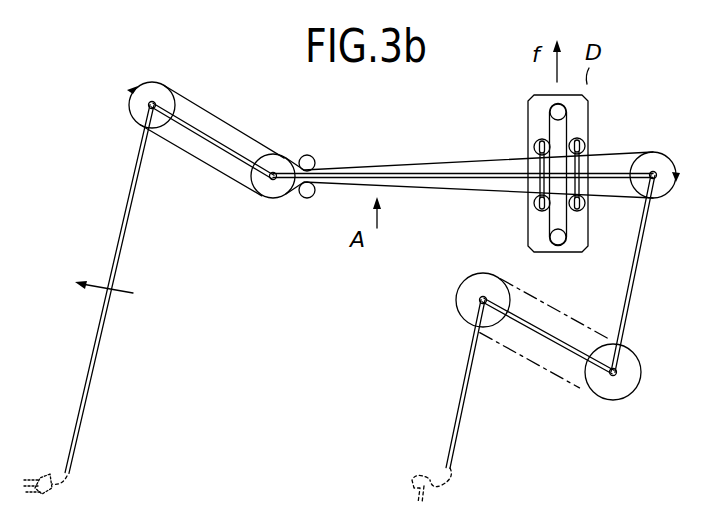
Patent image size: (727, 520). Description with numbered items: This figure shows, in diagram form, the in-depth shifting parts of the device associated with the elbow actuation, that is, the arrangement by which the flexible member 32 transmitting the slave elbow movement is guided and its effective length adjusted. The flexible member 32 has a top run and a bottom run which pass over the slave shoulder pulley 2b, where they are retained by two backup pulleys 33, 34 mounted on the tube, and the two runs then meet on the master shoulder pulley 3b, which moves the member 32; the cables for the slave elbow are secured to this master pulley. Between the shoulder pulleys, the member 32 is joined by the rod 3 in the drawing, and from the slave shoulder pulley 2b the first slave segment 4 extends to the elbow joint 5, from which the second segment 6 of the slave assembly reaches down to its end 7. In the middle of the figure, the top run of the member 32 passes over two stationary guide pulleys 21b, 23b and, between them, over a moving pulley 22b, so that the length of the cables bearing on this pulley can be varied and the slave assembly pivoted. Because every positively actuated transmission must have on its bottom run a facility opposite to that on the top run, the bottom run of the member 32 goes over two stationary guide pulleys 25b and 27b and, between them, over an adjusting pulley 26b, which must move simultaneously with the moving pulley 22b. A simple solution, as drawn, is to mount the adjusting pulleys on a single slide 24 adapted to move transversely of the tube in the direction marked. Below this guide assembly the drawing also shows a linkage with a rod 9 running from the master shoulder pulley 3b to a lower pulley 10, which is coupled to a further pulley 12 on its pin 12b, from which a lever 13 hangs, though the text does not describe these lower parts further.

The slave shoulder pulley 2b is at (276, 157).
The connecting rod 3 is at (662, 193).
The master shoulder pulley 3b is at (667, 164).
The first slave segment 4 is at (190, 133).
The elbow joint 5 is at (165, 85).
The second segment of the slave assembly 6 is at (123, 236).
The pivot foot 7 is at (72, 480).
The link rod 9 is at (628, 320).
The pulley 10 is at (608, 380).
The pulley pin 12 is at (480, 297).
The pulley 12b is at (465, 309).
The lever 13 is at (461, 400).
The stationary guide pulley 21b is at (534, 145).
The moving pulley 22b is at (565, 107).
The stationary guide pulley 23b is at (583, 141).
The slide 24 is at (535, 99).
The stationary guide pulley 25b is at (535, 202).
The adjusting pulley 26b is at (551, 238).
The stationary guide pulley 27b is at (584, 212).
The flexible member 32 is at (245, 122).
The backup pulley 33 is at (315, 158).
The backup pulley 34 is at (314, 196).